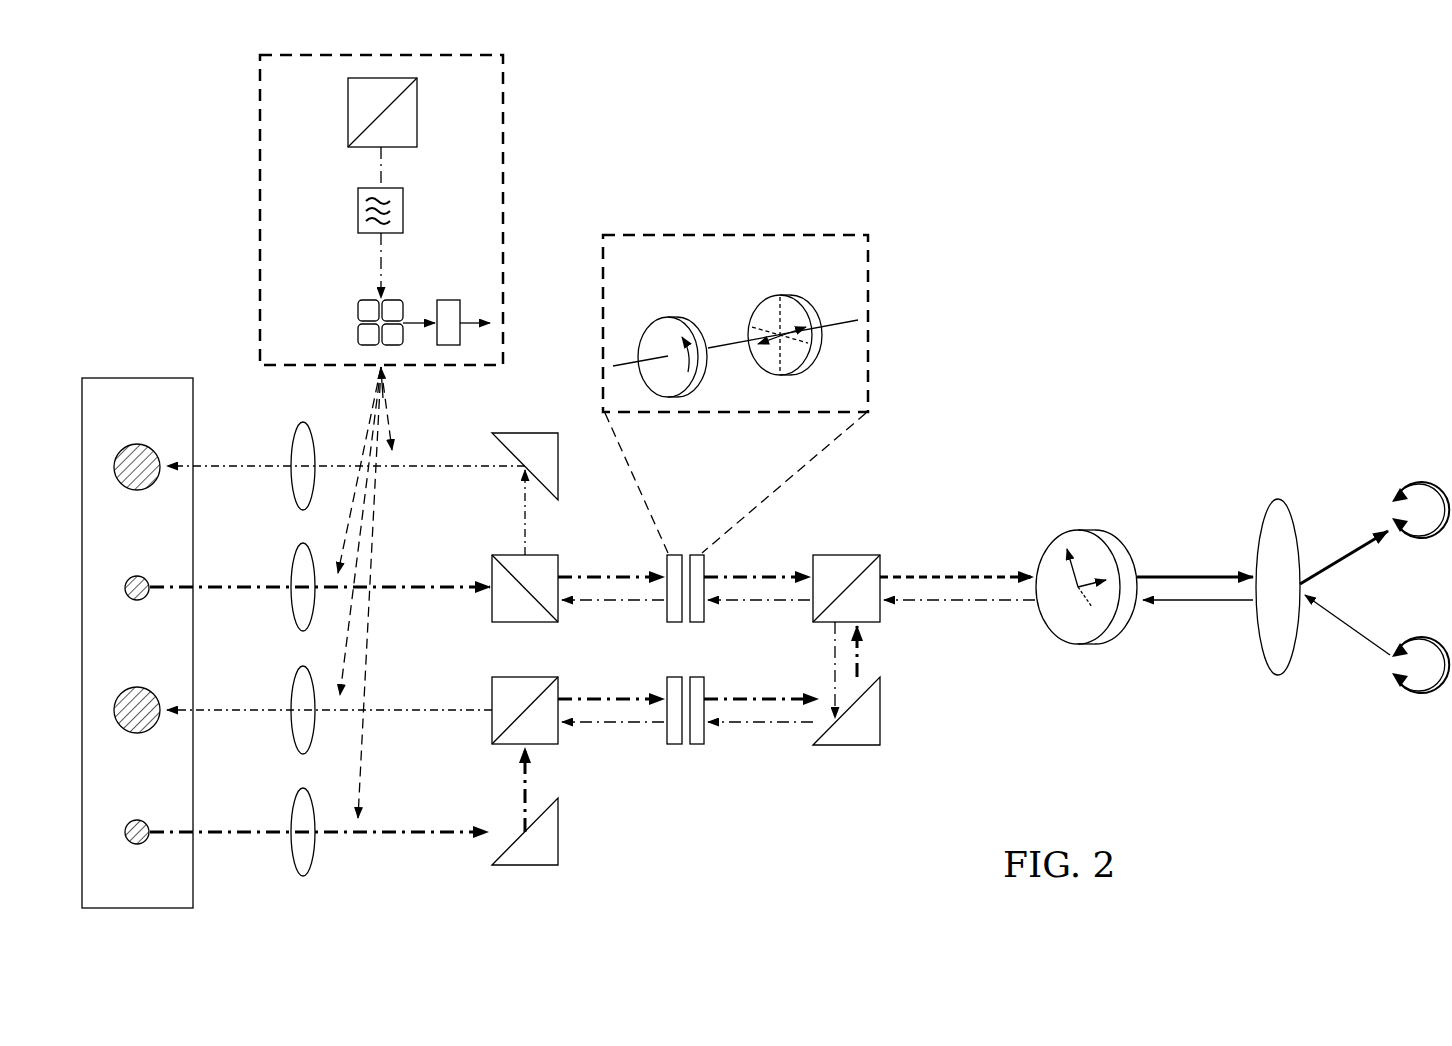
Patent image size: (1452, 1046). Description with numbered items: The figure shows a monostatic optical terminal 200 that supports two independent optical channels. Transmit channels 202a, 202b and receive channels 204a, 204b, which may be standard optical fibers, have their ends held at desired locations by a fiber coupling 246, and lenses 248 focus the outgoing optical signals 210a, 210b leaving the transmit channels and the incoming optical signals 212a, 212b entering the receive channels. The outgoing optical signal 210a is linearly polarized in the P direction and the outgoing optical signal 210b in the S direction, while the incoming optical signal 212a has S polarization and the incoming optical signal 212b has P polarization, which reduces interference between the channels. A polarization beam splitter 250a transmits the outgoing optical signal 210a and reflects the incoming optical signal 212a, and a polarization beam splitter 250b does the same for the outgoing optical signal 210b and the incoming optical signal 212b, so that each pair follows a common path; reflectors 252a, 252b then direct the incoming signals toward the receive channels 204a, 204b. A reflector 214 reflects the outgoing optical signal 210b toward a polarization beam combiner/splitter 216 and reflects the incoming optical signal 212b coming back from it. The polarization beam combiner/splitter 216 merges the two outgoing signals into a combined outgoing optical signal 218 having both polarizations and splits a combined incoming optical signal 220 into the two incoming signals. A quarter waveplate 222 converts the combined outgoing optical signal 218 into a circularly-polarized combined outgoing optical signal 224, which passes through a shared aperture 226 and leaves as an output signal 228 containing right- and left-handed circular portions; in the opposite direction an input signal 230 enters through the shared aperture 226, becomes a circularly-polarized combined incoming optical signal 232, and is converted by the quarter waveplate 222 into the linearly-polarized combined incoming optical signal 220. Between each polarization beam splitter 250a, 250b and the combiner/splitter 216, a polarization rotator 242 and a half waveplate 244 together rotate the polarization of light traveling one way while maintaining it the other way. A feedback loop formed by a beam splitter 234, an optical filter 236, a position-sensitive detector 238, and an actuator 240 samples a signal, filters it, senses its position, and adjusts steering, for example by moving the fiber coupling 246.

The monostatic optical terminal 200 is at (1157, 253).
The transmit channel 202a is at (137, 601).
The transmit channel 202b is at (137, 845).
The receive channel 204a is at (137, 443).
The receive channel 204b is at (137, 734).
The outgoing optical signal 210a is at (240, 598).
The outgoing optical signal 210b is at (248, 840).
The incoming optical signal 212a is at (246, 462).
The incoming optical signal 212b is at (246, 716).
The reflector 214 is at (882, 712).
The polarization beam combiner/splitter 216 is at (848, 552).
The combined outgoing optical signal 218 is at (955, 574).
The combined incoming optical signal 220 is at (968, 604).
The quarter waveplate 222 is at (1105, 648).
The circularly-polarized combined outgoing optical signal 224 is at (1187, 574).
The shared aperture 226 is at (1282, 676).
The output signal 228 is at (1354, 541).
The input signal 230 is at (1357, 630).
The circularly-polarized combined incoming optical signal 232 is at (1196, 604).
The beam splitter 234 is at (346, 108).
The optical filter 236 is at (356, 207).
The position-sensitive detector 238 is at (356, 310).
The actuator 240 is at (450, 298).
The polarization rotator 242 is at (665, 315).
The half waveplate 244 is at (775, 297).
The fiber coupling 246 is at (135, 375).
The lenses 248 is at (302, 882).
The polarization beam splitter 250a is at (512, 553).
The polarization beam splitter 250b is at (490, 728).
The reflector 252a is at (536, 431).
The reflector 252b is at (560, 845).